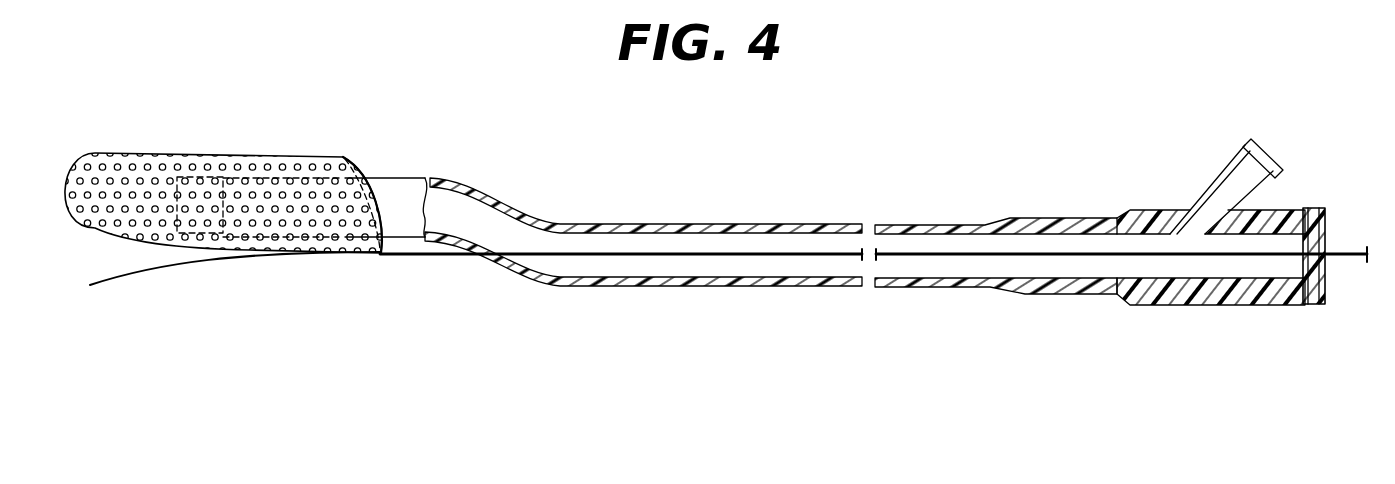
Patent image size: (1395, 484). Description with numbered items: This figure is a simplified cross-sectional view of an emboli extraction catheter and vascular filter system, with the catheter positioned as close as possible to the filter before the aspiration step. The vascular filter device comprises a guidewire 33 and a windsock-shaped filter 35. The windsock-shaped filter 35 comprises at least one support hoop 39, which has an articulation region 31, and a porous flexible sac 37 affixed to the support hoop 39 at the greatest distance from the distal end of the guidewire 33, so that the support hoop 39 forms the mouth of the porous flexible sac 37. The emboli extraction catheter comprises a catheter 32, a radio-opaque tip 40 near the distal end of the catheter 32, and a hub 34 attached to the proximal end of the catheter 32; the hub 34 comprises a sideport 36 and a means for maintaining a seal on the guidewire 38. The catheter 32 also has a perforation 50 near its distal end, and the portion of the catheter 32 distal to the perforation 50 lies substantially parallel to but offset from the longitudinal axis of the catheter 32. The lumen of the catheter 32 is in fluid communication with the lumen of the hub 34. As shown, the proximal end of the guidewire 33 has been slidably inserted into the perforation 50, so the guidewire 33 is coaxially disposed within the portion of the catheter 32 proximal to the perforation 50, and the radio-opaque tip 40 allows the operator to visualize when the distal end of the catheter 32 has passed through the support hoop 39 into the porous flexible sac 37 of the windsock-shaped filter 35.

The articulation region 31 is at (379, 262).
The catheter 32 is at (746, 224).
The guidewire 33 is at (950, 256).
The hub 34 is at (1213, 306).
The windsock-shaped filter 35 is at (240, 251).
The sideport 36 is at (1218, 182).
The porous flexible sac 37 is at (105, 158).
The means for maintaining a seal on the guidewire 38 is at (1320, 268).
The support hoop 39 is at (356, 170).
The radio-opaque tip 40 is at (213, 160).
The perforation 50 is at (473, 255).